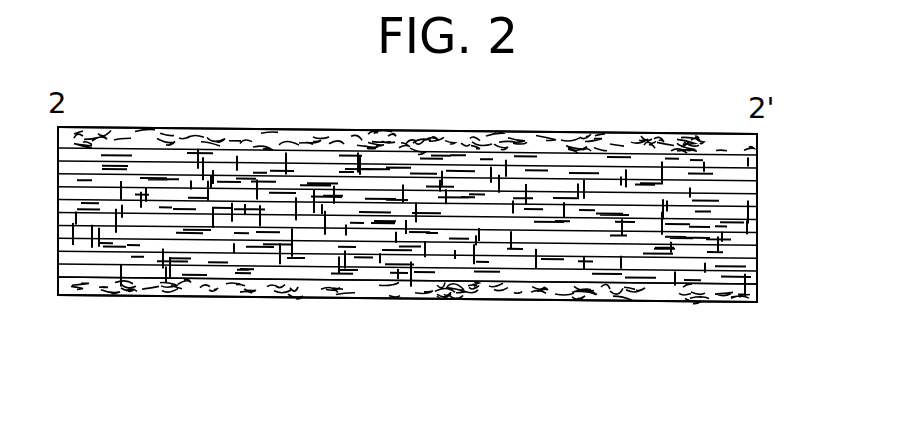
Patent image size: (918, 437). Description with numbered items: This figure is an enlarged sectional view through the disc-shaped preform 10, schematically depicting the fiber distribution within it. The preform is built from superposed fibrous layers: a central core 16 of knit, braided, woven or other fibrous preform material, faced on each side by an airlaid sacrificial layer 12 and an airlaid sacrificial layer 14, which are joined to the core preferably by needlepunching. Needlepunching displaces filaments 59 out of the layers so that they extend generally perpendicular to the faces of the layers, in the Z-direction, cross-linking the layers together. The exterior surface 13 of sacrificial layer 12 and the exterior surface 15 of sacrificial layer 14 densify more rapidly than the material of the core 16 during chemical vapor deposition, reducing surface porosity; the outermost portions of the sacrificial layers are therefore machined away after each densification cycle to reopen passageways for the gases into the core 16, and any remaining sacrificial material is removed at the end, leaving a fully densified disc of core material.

The disc-shaped preform 10 is at (285, 112).
The airlaid sacrificial layer 12 is at (759, 145).
The surface 13 is at (547, 131).
The airlaid sacrificial layer 14 is at (759, 293).
The surface 15 is at (560, 303).
The core 16 is at (766, 157).
The filaments 59 is at (349, 260).